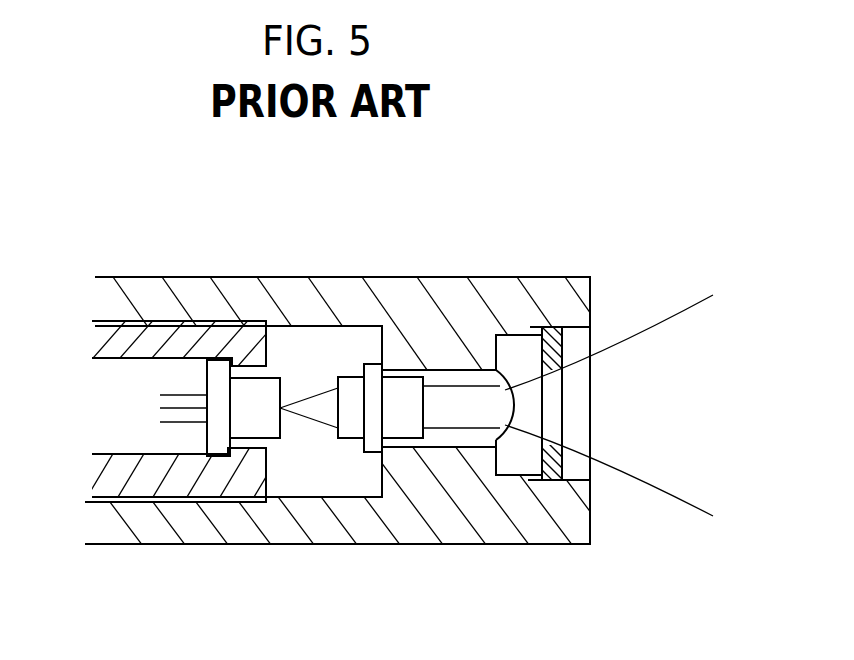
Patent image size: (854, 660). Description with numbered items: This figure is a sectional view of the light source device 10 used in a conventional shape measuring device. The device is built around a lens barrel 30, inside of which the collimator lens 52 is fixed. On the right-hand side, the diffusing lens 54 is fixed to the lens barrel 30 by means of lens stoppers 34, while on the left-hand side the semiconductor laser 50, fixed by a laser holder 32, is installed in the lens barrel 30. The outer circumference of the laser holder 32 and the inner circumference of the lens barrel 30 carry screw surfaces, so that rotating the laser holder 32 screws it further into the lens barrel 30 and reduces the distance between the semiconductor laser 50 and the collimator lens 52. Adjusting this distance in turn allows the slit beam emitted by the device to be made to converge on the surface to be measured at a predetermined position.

The light source device 10 is at (211, 262).
The lens barrel 30 is at (444, 545).
The laser holder 32 is at (266, 473).
The lens stoppers 34 is at (562, 466).
The semiconductor laser 50 is at (281, 428).
The collimator lens 52 is at (347, 377).
The diffusing lens 54 is at (521, 360).